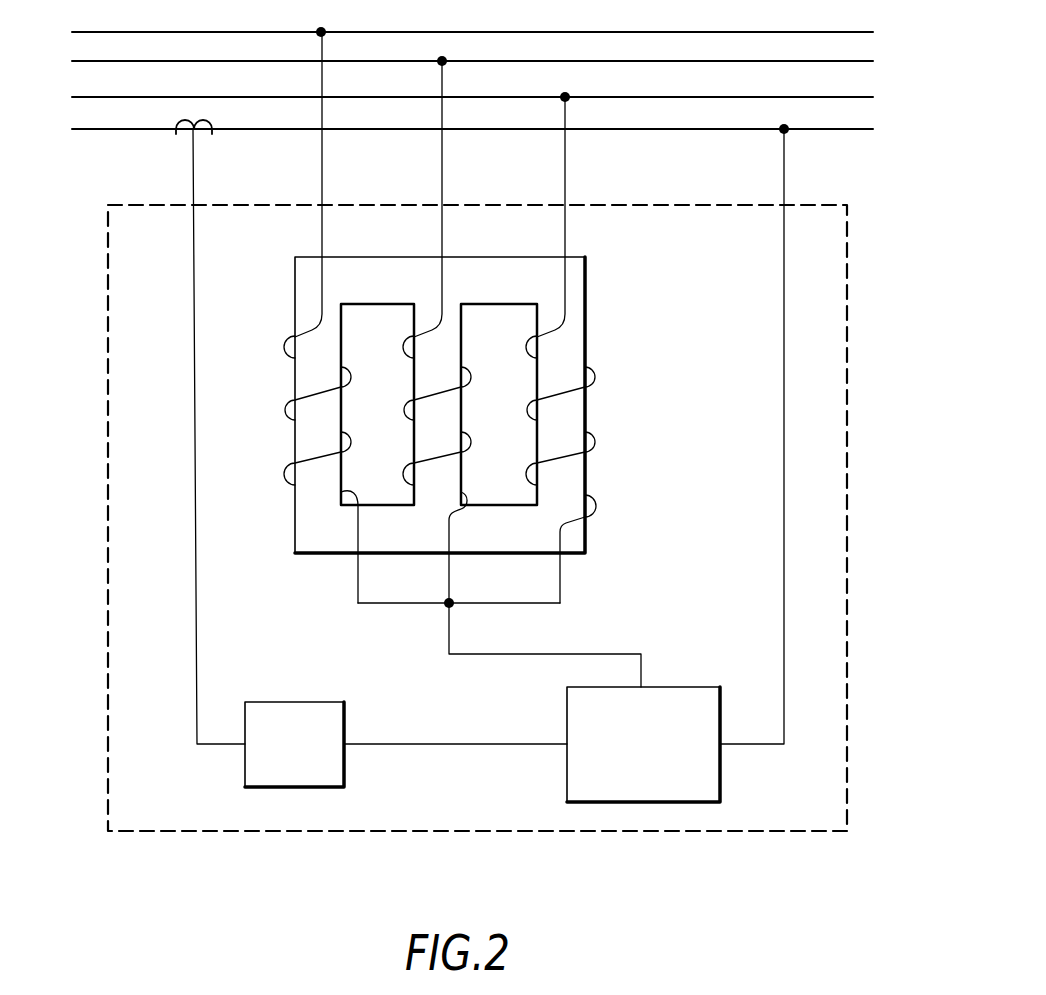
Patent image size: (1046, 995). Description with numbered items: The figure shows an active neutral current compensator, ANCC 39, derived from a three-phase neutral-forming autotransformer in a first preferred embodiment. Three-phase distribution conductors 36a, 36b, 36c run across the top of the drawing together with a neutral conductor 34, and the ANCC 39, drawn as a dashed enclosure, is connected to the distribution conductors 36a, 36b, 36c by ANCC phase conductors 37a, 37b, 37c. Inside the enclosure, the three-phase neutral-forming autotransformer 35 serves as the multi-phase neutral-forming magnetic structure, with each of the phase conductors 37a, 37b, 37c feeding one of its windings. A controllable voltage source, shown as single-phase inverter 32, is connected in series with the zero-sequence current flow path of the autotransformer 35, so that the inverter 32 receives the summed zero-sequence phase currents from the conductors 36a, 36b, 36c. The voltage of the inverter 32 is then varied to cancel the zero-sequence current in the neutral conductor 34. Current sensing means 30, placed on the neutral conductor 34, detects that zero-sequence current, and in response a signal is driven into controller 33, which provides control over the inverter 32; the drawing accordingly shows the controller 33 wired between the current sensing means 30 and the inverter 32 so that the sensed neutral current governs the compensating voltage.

The three-phase distribution conductor 36a is at (72, 32).
The three-phase distribution conductor 36b is at (72, 61).
The three-phase distribution conductor 36c is at (72, 97).
The neutral conductor 34 is at (72, 129).
The current sensing means 30 is at (210, 131).
The ANCC phase conductor 37a is at (323, 164).
The ANCC phase conductor 37b is at (443, 164).
The ANCC phase conductor 37c is at (566, 164).
The three-phase neutral-forming autotransformer 35 is at (586, 291).
The ANCC 39 is at (847, 430).
The controller 33 is at (322, 702).
The single-phase inverter 32 is at (700, 687).